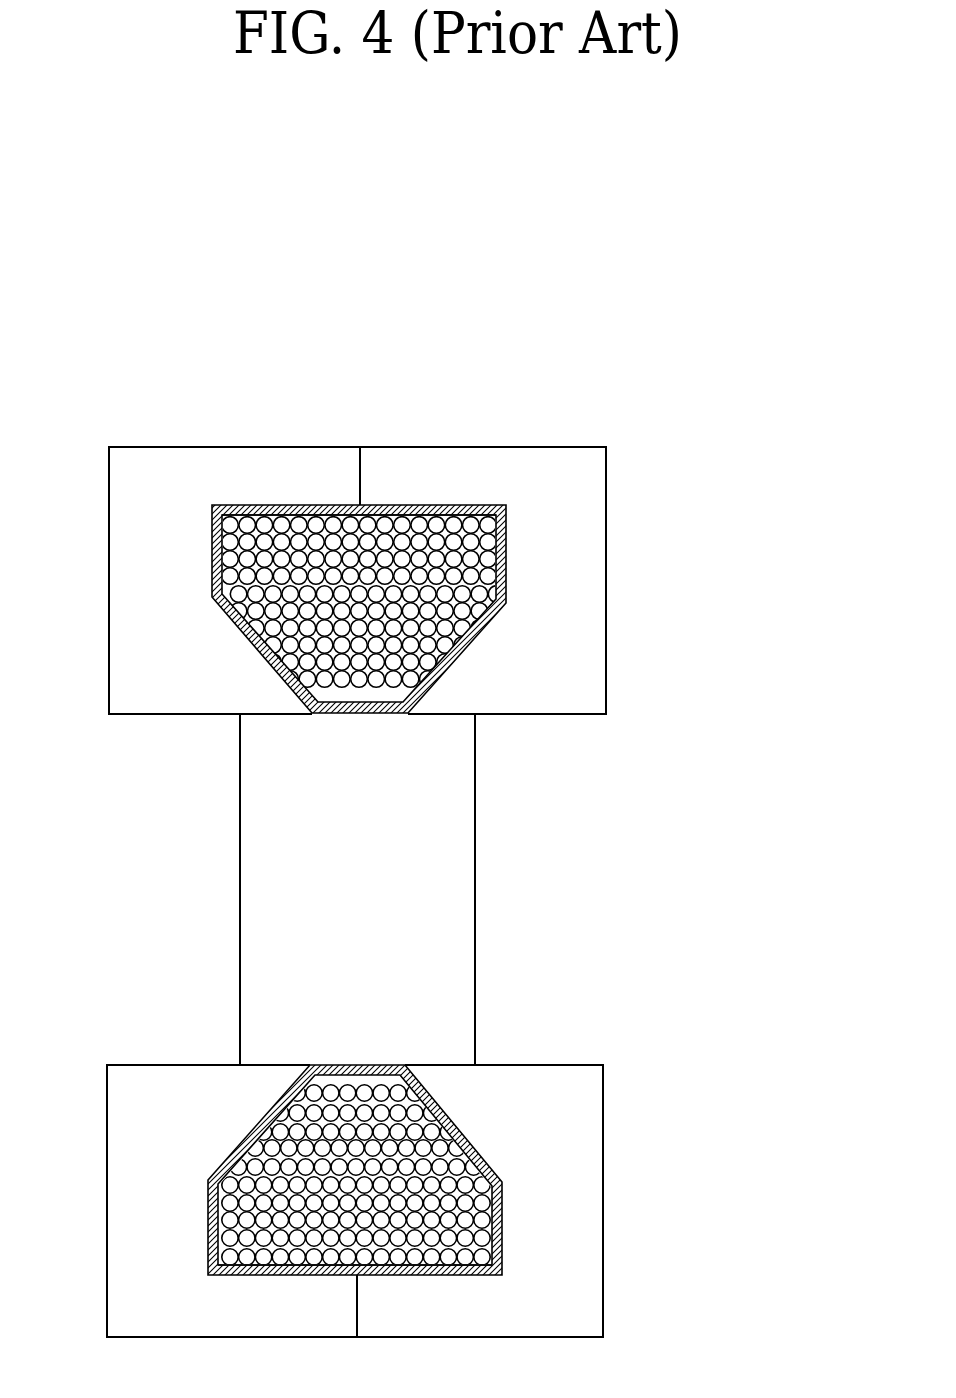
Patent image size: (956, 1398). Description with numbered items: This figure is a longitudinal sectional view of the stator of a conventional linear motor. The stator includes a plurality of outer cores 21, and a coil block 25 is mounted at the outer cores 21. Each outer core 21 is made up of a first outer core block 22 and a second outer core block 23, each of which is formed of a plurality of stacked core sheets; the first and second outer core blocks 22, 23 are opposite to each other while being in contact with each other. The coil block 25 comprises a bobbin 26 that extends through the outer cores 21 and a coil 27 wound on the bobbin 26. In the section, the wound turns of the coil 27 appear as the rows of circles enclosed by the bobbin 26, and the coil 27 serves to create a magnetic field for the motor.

The outer core 21 is at (357, 460).
The first outer core block 22 is at (308, 480).
The second outer core block 23 is at (415, 463).
The coil block 25 is at (511, 609).
The bobbin 26 is at (505, 582).
The coil 27 is at (505, 535).